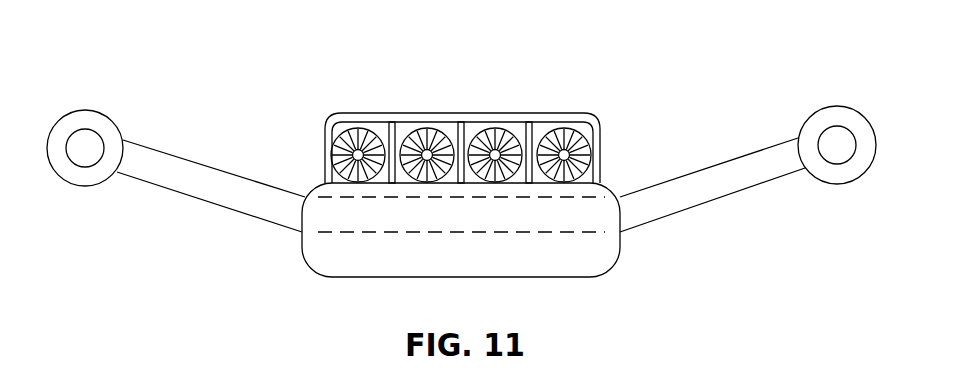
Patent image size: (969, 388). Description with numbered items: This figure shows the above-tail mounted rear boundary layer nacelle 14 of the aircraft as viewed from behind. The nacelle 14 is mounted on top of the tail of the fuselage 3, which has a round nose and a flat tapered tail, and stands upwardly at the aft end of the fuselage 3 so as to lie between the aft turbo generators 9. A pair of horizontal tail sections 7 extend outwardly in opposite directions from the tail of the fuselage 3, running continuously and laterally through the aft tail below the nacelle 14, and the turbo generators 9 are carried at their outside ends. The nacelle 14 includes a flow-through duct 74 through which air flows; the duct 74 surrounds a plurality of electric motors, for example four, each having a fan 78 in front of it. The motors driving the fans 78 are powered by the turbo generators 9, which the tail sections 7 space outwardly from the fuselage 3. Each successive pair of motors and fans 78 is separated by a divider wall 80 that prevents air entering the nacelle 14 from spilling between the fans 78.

The fuselage 3 is at (615, 254).
The horizontal tail sections 7 is at (178, 185).
The aft turbo generators 9 is at (82, 110).
The rear boundary layer nacelle 14 is at (460, 98).
The flow-through duct 74 is at (507, 113).
The fans 78 is at (352, 147).
The divider wall 80 is at (391, 128).